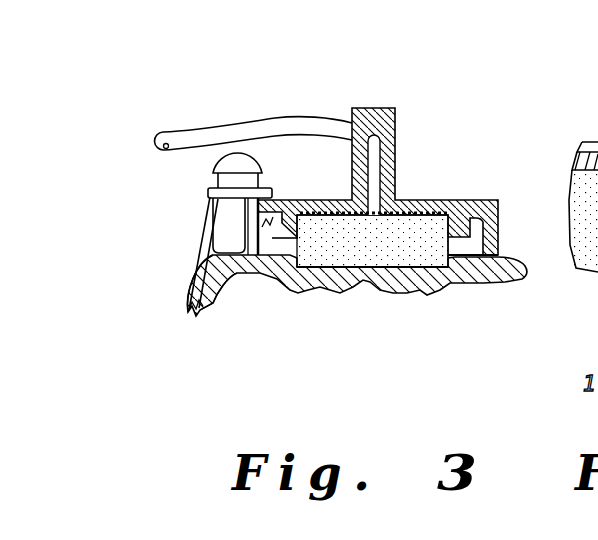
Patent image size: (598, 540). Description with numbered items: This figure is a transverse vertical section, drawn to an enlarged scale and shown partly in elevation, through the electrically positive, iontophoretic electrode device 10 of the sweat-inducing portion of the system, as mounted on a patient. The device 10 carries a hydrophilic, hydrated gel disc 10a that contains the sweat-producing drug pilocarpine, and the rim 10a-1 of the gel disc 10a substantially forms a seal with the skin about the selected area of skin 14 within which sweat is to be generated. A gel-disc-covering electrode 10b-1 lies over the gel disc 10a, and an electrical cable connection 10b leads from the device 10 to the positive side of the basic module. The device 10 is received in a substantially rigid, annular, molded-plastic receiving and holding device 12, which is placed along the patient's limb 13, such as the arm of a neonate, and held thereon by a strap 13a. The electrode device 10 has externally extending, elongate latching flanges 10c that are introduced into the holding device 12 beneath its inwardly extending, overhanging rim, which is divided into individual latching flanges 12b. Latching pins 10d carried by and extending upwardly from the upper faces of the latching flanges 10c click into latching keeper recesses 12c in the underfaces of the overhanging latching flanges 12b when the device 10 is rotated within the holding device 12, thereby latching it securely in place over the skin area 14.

The electrically positive iontophoretic electrode device 10 is at (393, 110).
The gel disc 10a is at (396, 252).
The rim of gel disc 10a-1 is at (452, 278).
The electrical cable connection 10b is at (190, 128).
The electrode 10b-1 is at (407, 212).
The latching flange 10c is at (265, 213).
The latching pin 10d is at (250, 258).
The receiving and holding device 12 is at (198, 305).
The latching flange 12b is at (218, 197).
The latching keeper recess 12c is at (260, 220).
The limb 13 is at (335, 285).
The strap 13a is at (203, 222).
The selected area of skin 14 is at (367, 269).